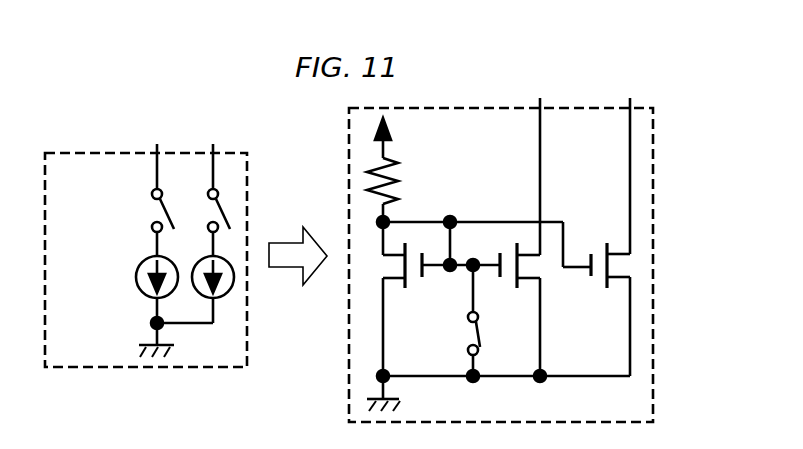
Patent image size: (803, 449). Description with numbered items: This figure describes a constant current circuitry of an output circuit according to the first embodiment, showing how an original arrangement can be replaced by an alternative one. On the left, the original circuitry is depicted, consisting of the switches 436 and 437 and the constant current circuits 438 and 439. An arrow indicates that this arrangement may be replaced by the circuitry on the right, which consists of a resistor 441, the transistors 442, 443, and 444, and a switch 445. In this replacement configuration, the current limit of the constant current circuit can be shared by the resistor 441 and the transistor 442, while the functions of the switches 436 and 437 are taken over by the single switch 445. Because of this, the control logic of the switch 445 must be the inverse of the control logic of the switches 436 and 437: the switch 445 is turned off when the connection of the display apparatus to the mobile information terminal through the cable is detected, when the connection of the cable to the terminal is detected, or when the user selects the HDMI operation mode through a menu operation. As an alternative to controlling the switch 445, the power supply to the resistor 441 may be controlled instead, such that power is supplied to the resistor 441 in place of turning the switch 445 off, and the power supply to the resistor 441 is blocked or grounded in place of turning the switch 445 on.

The switch 436 is at (203, 220).
The switch 437 is at (147, 206).
The constant current circuit 438 is at (197, 302).
The constant current circuit 439 is at (133, 273).
The resistor 441 is at (405, 187).
The transistor 442 is at (413, 287).
The transistor 443 is at (511, 287).
The transistor 444 is at (602, 283).
The switch 445 is at (467, 328).